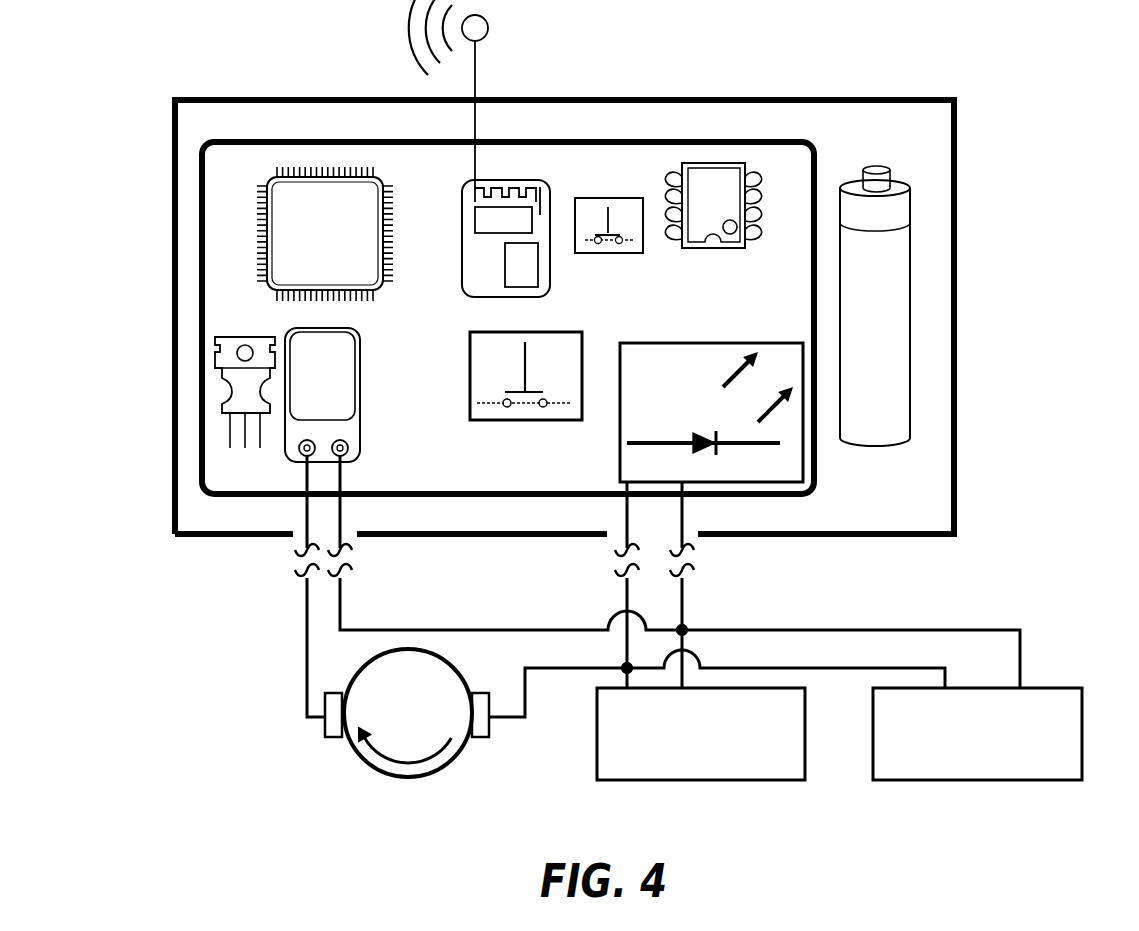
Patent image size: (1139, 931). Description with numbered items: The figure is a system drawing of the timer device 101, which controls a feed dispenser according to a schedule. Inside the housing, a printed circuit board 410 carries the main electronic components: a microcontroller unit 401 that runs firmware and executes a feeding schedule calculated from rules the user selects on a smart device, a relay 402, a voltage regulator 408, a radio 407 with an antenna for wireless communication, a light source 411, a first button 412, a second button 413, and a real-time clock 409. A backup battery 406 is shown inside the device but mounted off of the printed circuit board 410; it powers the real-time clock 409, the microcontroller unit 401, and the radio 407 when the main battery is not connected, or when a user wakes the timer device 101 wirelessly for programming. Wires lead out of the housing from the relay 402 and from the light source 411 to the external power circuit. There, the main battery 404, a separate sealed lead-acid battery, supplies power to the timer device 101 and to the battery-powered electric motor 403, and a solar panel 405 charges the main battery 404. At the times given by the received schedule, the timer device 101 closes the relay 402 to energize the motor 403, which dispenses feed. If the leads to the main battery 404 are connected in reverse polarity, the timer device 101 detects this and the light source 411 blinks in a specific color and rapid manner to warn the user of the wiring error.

The timer device 101 is at (125, 205).
The microcontroller unit 401 is at (377, 290).
The relay 402 is at (355, 402).
The electric motor 403 is at (333, 728).
The main battery 404 is at (597, 778).
The solar panel 405 is at (1082, 688).
The backup battery 406 is at (862, 173).
The radio 407 is at (548, 268).
The voltage regulator 408 is at (225, 400).
The real-time clock 409 is at (717, 250).
The printed circuit board 410 is at (817, 470).
The light source 411 is at (618, 423).
The first button 412 is at (470, 398).
The second button 413 is at (605, 200).